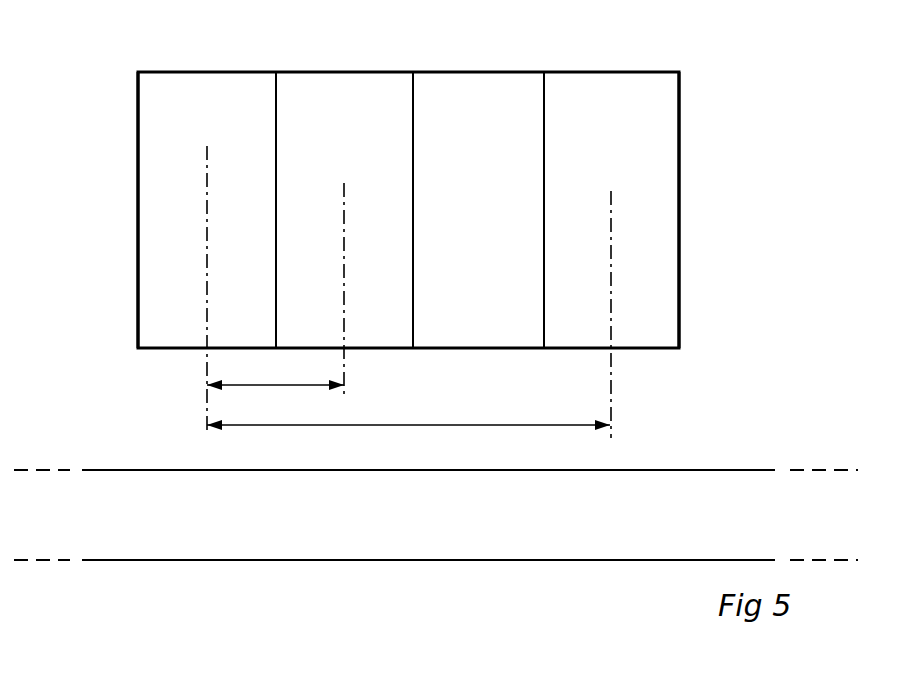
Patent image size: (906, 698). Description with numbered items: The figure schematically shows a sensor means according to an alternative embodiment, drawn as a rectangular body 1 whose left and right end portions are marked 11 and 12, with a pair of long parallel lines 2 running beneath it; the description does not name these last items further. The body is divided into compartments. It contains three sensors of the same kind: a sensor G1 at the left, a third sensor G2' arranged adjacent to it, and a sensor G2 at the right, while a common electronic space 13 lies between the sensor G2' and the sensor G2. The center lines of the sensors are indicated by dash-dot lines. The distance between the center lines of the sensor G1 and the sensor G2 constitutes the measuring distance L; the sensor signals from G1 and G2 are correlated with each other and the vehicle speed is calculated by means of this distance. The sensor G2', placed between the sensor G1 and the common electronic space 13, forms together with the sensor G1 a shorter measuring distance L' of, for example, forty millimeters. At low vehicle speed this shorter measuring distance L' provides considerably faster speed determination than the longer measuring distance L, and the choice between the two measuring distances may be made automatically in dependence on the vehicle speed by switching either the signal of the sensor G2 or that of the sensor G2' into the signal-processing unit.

The optical component body 1 is at (698, 161).
The optical waveguide 2 is at (257, 538).
The first end face 11 is at (155, 223).
The second end face 12 is at (661, 273).
The common electronic space 13 is at (483, 93).
The sensor G1 is at (213, 95).
The third sensor G2' is at (323, 206).
The sensor G2 is at (629, 230).
The shorter measuring distance L' is at (275, 374).
The measuring distance L is at (408, 411).